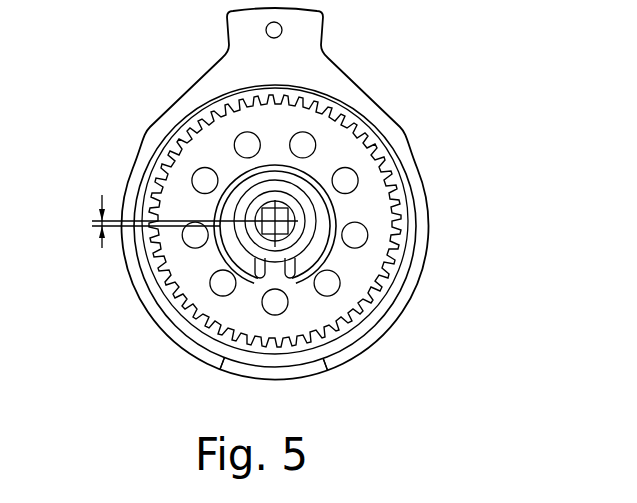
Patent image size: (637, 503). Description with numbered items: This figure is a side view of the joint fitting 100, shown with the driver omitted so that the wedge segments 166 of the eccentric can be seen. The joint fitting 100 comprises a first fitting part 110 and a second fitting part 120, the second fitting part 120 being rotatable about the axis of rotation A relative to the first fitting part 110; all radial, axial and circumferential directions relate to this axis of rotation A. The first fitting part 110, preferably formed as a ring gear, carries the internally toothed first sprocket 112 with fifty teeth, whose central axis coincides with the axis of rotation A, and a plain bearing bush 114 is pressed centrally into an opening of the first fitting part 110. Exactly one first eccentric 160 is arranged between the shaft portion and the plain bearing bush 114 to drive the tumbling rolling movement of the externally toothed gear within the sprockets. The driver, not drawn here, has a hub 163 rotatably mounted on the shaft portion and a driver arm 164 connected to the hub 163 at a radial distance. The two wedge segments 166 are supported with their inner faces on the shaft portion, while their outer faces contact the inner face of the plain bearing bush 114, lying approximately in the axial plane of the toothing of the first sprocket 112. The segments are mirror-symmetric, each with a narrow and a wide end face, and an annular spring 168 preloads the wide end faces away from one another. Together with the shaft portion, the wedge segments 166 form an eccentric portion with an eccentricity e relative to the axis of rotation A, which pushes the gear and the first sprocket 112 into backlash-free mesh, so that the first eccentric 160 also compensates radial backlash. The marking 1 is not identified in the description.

The joint fitting 100 is at (444, 44).
The first fitting part 110 is at (395, 157).
The first sprocket 112 is at (407, 202).
The plain bearing bush 114 is at (277, 167).
The second fitting part 120 is at (407, 168).
The first eccentric 160 is at (344, 267).
The hub 163 is at (331, 302).
The driver arm 164 is at (318, 157).
The wedge segments 166 is at (333, 234).
The spring 168 is at (182, 319).
The axis 1 is at (192, 177).
The axis of rotation A is at (243, 173).
The eccentricity e is at (93, 223).